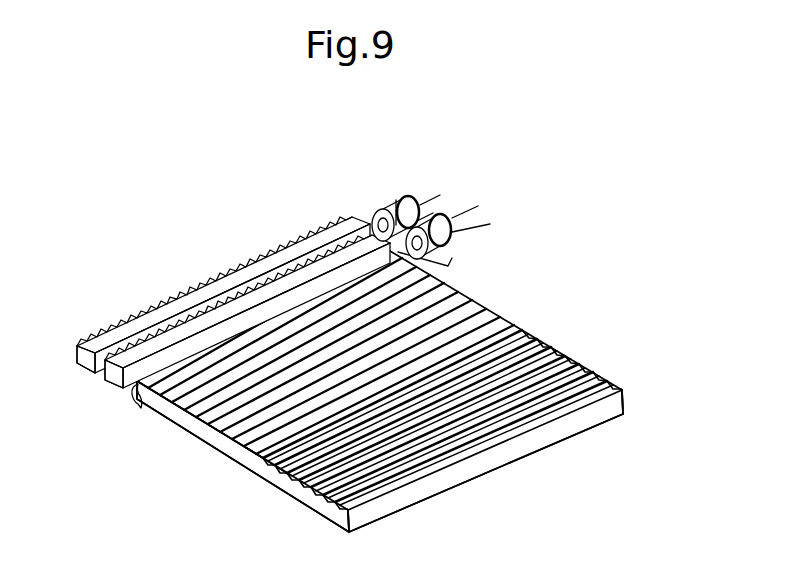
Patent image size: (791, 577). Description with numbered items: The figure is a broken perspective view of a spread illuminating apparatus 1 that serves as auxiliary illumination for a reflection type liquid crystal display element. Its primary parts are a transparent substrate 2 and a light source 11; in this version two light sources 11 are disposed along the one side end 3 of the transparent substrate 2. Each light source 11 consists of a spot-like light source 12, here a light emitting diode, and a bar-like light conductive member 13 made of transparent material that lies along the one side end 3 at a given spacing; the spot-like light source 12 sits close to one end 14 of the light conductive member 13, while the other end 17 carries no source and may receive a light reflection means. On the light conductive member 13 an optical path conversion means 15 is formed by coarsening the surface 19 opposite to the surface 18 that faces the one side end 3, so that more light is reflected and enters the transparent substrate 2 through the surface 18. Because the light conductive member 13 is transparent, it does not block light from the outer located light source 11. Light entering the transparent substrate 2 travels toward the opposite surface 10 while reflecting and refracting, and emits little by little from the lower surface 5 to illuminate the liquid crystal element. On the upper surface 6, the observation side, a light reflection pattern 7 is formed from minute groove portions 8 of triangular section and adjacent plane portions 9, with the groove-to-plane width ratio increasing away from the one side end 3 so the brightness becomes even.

The spread illuminating apparatus 1 is at (198, 452).
The transparent substrate 2 is at (268, 470).
The one side end 3 is at (140, 408).
The lower surface 5 is at (303, 508).
The upper surface 6 is at (462, 306).
The light reflection pattern 7 is at (446, 358).
The groove portions 8 is at (585, 367).
The plane portions 9 is at (508, 325).
The opposite surface 10 is at (449, 478).
The light source 11 is at (348, 181).
The spot-like light source 12 is at (378, 254).
The light conductive member 13 is at (318, 252).
The one end 14 is at (440, 258).
The optical path conversion means 15 is at (165, 305).
The other end 17 is at (86, 362).
The surface opposing the one end side 18 is at (150, 362).
The opposite surface 19 is at (255, 297).